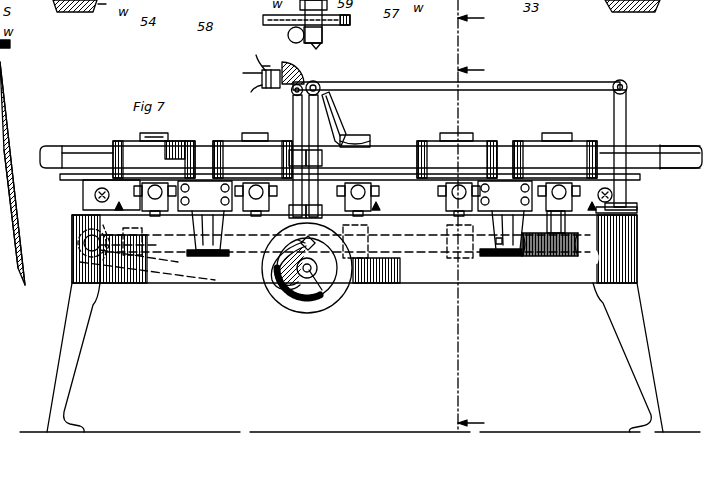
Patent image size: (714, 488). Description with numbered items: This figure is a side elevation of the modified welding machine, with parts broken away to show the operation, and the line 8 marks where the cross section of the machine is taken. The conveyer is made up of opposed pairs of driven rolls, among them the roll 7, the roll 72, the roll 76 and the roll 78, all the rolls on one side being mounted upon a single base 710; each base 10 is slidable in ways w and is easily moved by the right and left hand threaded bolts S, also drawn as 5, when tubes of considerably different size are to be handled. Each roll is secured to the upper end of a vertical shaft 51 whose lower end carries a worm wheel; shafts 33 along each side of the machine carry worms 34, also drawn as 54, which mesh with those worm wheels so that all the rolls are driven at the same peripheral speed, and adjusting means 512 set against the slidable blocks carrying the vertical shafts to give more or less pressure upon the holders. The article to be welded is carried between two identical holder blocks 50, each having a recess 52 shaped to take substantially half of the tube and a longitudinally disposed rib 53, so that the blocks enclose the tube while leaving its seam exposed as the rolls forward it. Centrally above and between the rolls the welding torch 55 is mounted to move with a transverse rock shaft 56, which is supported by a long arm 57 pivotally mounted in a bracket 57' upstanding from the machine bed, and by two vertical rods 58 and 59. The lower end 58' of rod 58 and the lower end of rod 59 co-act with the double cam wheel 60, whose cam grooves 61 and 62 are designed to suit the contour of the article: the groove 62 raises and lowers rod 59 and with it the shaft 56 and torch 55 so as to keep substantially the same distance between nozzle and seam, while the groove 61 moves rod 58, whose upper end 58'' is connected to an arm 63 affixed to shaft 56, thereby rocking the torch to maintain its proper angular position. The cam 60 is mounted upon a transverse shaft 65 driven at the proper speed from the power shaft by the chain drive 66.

The right and left hand threaded bolts 5 is at (360, 357).
The roll 7 is at (170, 140).
The roll 72 is at (250, 140).
The roll 76 is at (448, 140).
The roll 78 is at (528, 140).
The base 710 is at (76, 193).
The section line 8 is at (474, 216).
The base 10 is at (66, 204).
The shafts 33 is at (632, 6).
The worms 34 is at (170, 283).
The holder block 50 is at (68, 145).
The vertical shaft 51 is at (140, 135).
The recess 52 is at (572, 258).
The longitudinally disposed rib 53 is at (690, 148).
The worms 54 is at (440, 265).
The welding torch 55 is at (332, 118).
The transverse rock shaft 56 is at (82, 245).
The arm 57 is at (328, 182).
The bracket 57' is at (637, 150).
The vertical rod 58 is at (396, 166).
The lower end of rod 58 58' is at (285, 287).
The upper end of rod 58 58'' is at (259, 86).
The vertical rod 59 is at (322, 92).
The double cam wheel 60 is at (336, 292).
The cam groove 61 is at (312, 330).
The cam groove 62 is at (263, 19).
The arm 63 is at (304, 51).
The transverse shaft 65 is at (322, 272).
The chain drive 66 is at (262, 283).
The adjusting means 512 is at (376, 198).
The right and left hand threaded bolts S is at (613, 195).
The ways w is at (378, 204).